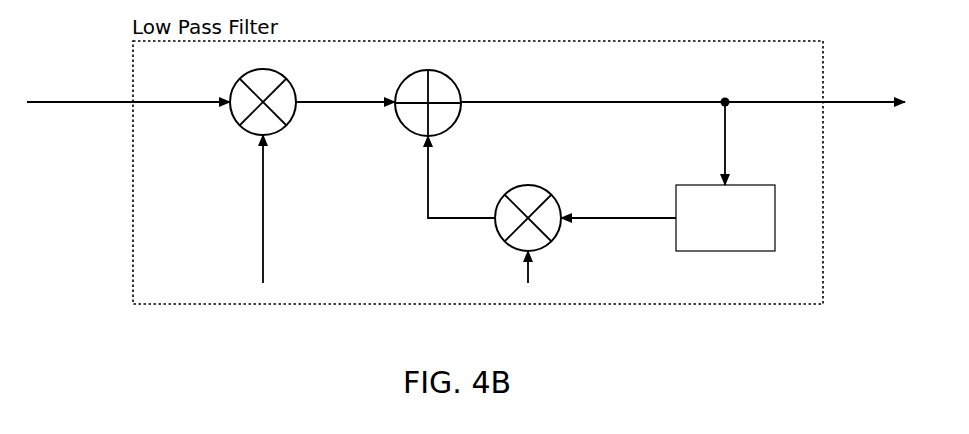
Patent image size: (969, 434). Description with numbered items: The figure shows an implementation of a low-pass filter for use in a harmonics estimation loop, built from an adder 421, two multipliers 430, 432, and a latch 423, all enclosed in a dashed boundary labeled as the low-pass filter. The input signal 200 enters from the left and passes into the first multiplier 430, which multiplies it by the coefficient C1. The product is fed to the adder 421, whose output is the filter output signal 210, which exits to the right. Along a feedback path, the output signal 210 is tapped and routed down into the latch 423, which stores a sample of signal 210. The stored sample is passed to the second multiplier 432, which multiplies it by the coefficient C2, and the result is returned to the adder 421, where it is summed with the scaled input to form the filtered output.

The signal 200 is at (128, 90).
The signal 210 is at (813, 93).
The adder 421 is at (560, 90).
The latch 423 is at (668, 176).
The multiplier 430 is at (312, 92).
The multiplier 432 is at (494, 193).
The coefficient C1 is at (278, 209).
The coefficient C2 is at (545, 267).